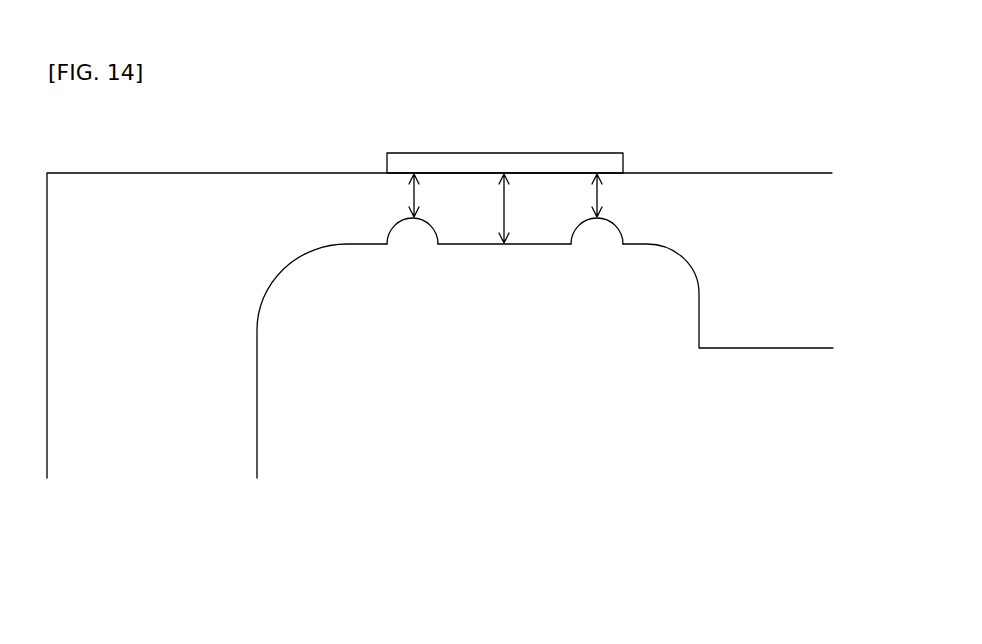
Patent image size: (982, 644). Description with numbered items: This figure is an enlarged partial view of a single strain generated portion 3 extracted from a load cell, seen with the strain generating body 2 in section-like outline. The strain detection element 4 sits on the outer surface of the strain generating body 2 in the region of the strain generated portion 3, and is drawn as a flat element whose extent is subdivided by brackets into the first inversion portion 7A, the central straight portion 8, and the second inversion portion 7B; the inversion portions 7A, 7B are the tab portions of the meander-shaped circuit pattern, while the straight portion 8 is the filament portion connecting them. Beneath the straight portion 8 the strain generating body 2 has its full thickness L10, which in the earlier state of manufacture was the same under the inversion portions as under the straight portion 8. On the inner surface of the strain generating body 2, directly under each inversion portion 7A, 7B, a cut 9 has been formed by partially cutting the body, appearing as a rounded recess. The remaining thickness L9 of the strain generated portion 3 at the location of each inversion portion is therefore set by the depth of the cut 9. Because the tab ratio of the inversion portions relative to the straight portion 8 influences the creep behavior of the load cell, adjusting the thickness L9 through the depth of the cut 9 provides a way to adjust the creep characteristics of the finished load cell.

The strain generating body 2 is at (201, 180).
The strain generated portion 3 is at (511, 310).
The strain detection element 4 is at (623, 155).
The inversion portion 7A is at (440, 140).
The inversion portion 7B is at (623, 140).
The straight portion 8 is at (568, 140).
The cut 9 is at (428, 232).
The thickness of the strain generated portion at the inversion portion L9 is at (500, 195).
The thickness of the strain generating body L10 is at (474, 208).